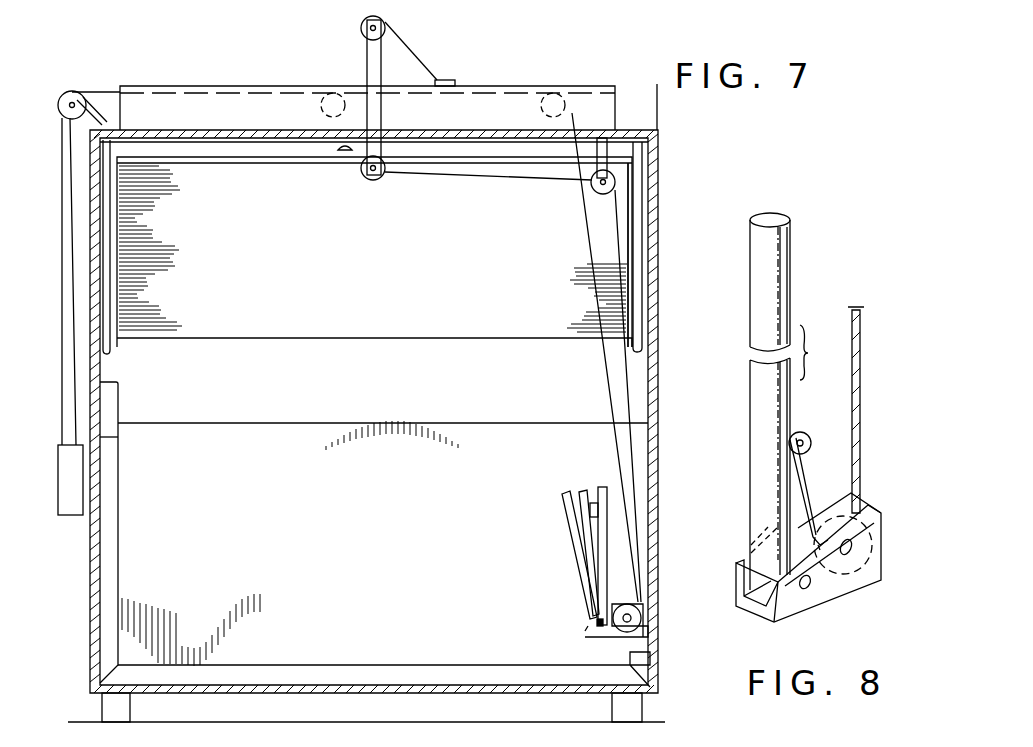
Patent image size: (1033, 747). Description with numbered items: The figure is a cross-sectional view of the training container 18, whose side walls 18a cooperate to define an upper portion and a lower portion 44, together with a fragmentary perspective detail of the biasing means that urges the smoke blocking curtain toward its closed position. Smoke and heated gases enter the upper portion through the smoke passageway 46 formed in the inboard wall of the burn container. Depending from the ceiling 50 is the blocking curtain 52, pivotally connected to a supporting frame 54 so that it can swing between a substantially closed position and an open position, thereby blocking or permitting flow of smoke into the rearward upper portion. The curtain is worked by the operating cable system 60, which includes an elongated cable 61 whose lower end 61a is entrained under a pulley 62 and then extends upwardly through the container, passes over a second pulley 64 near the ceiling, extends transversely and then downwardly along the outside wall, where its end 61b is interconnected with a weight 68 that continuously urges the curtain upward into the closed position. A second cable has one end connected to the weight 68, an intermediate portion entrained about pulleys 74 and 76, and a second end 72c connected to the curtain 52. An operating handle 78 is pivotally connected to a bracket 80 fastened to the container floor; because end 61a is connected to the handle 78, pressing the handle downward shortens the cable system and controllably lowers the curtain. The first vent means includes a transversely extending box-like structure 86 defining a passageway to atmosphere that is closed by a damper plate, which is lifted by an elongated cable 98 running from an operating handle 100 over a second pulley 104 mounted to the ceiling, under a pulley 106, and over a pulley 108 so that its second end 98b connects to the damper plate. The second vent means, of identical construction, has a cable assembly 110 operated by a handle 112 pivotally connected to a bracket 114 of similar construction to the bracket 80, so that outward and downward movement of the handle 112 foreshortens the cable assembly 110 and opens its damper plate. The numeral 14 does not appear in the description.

In FIG. 7, the cabinet housing 14 is at (668, 150).
In FIG. 7, the training container 18 is at (148, 626).
In FIG. 7, the side walls 18a is at (656, 193).
In FIG. 7, the lower portion 44 is at (462, 652).
In FIG. 7, the smoke passageway 46 is at (380, 420).
In FIG. 7, the ceiling 50 is at (202, 143).
In FIG. 7, the blocking curtain 52 is at (452, 312).
In FIG. 7, the supporting frame 54 is at (108, 273).
In FIG. 8, the operating cable system 60 is at (862, 415).
In FIG. 7, the elongated cable 61 is at (596, 305).
In FIG. 8, the elongated cable 61 is at (858, 338).
In FIG. 8, the lower end of cable 61a is at (816, 450).
In FIG. 7, the end of cable 61b is at (100, 437).
In FIG. 8, the pulley 62 is at (856, 567).
In FIG. 7, the second pulley 64 is at (540, 107).
In FIG. 7, the weight 68 is at (78, 481).
In FIG. 7, the second end of second cable 72c is at (340, 152).
In FIG. 7, the pulley 74 is at (74, 90).
In FIG. 7, the pulley 76 is at (320, 108).
In FIG. 7, the operating handle 78 is at (577, 493).
In FIG. 8, the operating handle 78 is at (775, 243).
In FIG. 8, the bracket 80 is at (813, 590).
In FIG. 7, the box-like structure 86 is at (520, 80).
In FIG. 7, the elongated cable 98 is at (636, 482).
In FIG. 7, the second end of cable 98b is at (437, 78).
In FIG. 7, the operating handle 100 is at (575, 562).
In FIG. 7, the second pulley 104 is at (595, 190).
In FIG. 7, the pulley 106 is at (373, 182).
In FIG. 7, the pulley 108 is at (363, 23).
In FIG. 7, the cable assembly 110 is at (516, 173).
In FIG. 7, the handle 112 is at (600, 487).
In FIG. 7, the bracket 114 is at (585, 629).